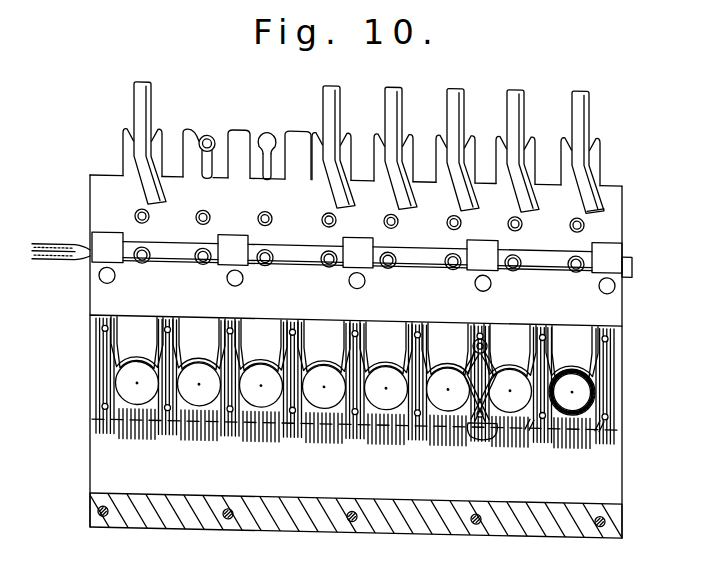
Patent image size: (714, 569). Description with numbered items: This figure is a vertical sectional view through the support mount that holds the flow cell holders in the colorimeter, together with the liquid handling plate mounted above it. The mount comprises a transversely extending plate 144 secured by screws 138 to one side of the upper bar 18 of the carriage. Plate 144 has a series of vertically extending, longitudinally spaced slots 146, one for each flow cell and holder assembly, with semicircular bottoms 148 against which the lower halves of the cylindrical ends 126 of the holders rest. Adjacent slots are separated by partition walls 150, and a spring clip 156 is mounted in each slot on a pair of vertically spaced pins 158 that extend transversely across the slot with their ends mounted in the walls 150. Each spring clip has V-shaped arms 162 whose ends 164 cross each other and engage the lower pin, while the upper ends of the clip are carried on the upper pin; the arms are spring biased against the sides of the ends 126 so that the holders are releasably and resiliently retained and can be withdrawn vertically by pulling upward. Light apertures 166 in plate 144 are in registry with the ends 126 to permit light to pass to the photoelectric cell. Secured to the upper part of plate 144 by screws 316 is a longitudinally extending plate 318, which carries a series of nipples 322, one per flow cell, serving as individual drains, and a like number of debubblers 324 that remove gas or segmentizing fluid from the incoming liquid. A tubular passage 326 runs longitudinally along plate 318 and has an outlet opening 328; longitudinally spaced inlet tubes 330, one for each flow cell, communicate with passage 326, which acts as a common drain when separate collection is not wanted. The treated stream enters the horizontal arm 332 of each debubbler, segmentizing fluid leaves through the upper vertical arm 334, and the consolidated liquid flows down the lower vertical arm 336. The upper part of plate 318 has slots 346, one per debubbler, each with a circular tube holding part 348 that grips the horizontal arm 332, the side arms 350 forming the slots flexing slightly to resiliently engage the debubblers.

The upper bar 18 is at (320, 495).
The end of flow cell holder 126 is at (570, 406).
The screws 138 is at (229, 517).
The plate 144 is at (622, 461).
The slots 146 is at (574, 320).
The semicircular bottoms 148 is at (434, 408).
The partition walls 150 is at (489, 323).
The spring clip 156 is at (187, 335).
The pins 158 is at (356, 323).
The V-shaped arms 162 is at (257, 330).
The ends of spring clip arms 164 is at (488, 431).
The light apertures 166 is at (263, 392).
The screws 316 is at (242, 276).
The plate 318 is at (623, 196).
The nipples 322 is at (259, 214).
The debubblers 324 is at (133, 102).
The tubular passage 326 is at (302, 239).
The outlet opening 328 is at (62, 261).
The inlet tubes 330 is at (150, 262).
The horizontal arm 332 is at (205, 131).
The upper vertical arm 334 is at (590, 89).
The lower vertical arm 336 is at (585, 187).
The slots 346 is at (268, 133).
The circular tube holding part 348 is at (271, 143).
The side arms 350 is at (245, 127).